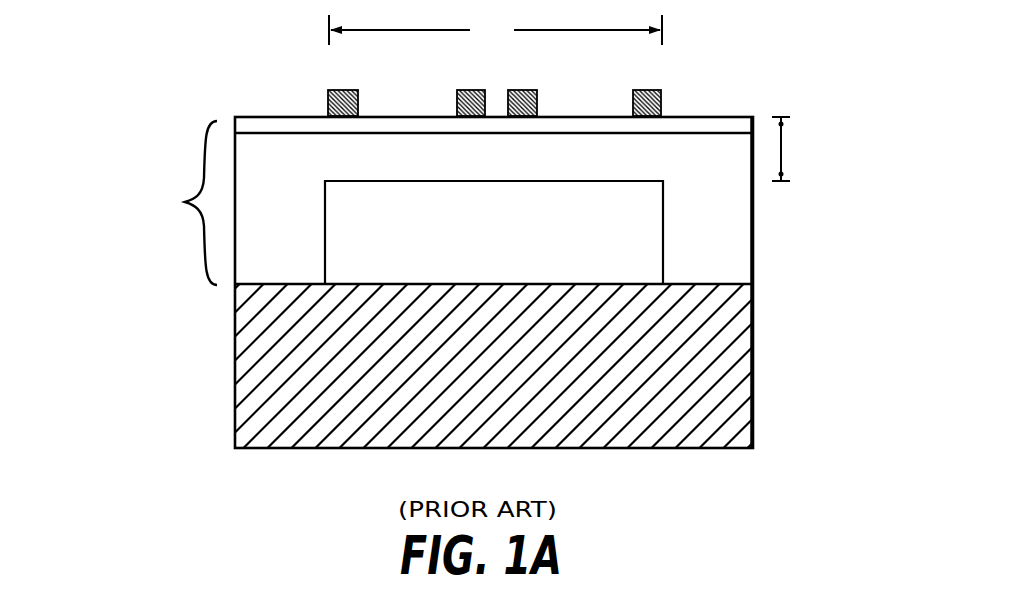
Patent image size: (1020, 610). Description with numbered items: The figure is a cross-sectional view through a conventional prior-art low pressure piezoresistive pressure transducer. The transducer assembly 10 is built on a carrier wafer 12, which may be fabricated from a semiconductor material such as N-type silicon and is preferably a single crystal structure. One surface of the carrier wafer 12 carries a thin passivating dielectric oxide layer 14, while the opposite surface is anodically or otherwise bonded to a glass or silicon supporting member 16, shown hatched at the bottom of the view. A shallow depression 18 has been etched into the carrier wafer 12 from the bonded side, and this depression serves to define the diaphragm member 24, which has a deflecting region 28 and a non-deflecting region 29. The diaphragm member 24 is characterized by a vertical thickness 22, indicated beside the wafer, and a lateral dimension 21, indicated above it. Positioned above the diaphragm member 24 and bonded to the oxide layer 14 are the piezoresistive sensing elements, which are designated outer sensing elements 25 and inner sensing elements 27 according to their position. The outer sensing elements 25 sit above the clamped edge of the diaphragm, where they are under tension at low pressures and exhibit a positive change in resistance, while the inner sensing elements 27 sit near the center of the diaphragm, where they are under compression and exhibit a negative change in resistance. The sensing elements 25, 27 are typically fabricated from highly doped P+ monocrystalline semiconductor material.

The transducer assembly 10 is at (146, 268).
The carrier wafer 12 is at (186, 203).
The passivating dielectric oxide layer 14 is at (257, 128).
The supporting member 16 is at (713, 360).
The shallow depression 18 is at (370, 252).
The lateral dimension 21 is at (495, 30).
The vertical thickness 22 is at (801, 149).
The diaphragm member 24 is at (567, 163).
The outer sensing elements 25 is at (350, 90).
The inner sensing elements 27 is at (470, 90).
The deflecting region 28 is at (615, 181).
The non-deflecting region 29 is at (708, 202).